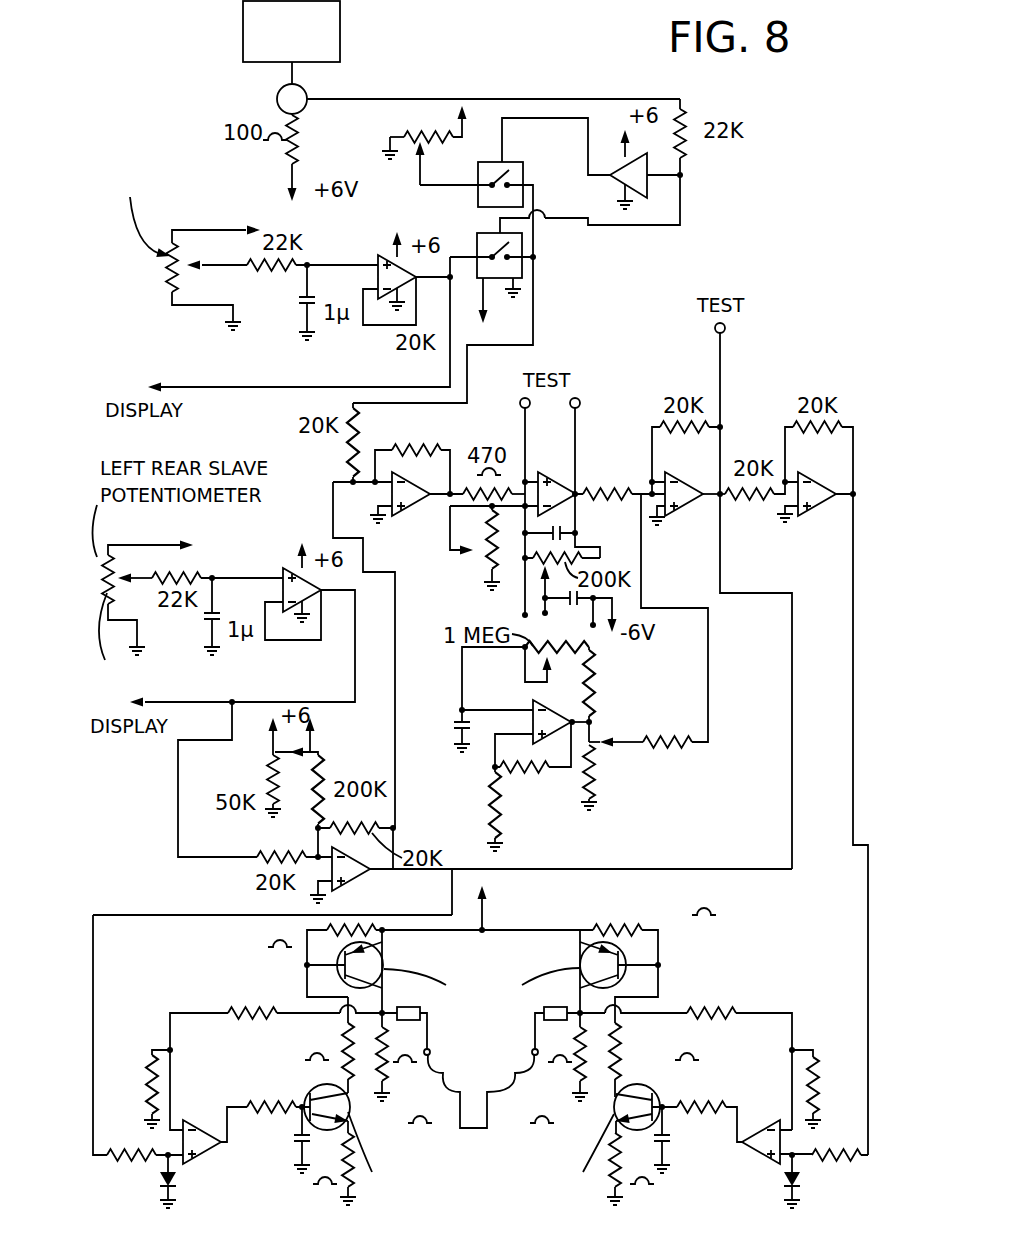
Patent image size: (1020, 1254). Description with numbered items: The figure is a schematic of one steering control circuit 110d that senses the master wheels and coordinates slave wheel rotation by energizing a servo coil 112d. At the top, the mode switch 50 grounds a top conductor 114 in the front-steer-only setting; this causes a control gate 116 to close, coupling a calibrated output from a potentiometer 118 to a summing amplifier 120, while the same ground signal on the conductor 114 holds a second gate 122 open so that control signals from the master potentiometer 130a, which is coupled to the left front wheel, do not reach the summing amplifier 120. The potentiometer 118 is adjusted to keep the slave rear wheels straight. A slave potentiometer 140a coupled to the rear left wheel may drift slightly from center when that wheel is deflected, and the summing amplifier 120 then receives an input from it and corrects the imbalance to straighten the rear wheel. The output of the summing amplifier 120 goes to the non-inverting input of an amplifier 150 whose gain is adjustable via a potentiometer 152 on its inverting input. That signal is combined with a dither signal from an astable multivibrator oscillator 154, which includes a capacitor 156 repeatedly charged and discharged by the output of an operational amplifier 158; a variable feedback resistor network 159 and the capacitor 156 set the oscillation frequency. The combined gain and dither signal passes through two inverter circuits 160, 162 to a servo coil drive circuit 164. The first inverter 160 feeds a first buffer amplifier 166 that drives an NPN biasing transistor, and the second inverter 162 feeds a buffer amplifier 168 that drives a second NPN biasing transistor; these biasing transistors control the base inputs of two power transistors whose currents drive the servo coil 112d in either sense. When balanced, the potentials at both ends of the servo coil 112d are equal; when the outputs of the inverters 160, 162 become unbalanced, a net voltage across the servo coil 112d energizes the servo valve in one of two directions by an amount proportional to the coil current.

The mode switch 50 is at (338, 24).
The top conductor 114 is at (394, 98).
The control gate 116 is at (505, 158).
The potentiometer 118 is at (398, 134).
The second gate 122 is at (477, 240).
The master potentiometer 130a is at (182, 286).
The steering control circuit 110d is at (258, 418).
The slave potentiometer 140a is at (159, 601).
The summing amplifier 120 is at (399, 518).
The potentiometer 152 is at (487, 530).
The amplifier 150 is at (565, 478).
The first inverter 160 is at (683, 512).
The second inverter 162 is at (816, 512).
The variable feedback resistor network 159 is at (645, 670).
The capacitor 156 is at (458, 718).
The operational amplifier 158 is at (533, 706).
The astable multivibrator oscillator 154 is at (572, 814).
The servo coil drive circuit 164 is at (480, 1047).
The first buffer amplifier 166 is at (207, 1145).
The buffer amplifier 168 is at (757, 1147).
The servo coil 112d is at (527, 1127).